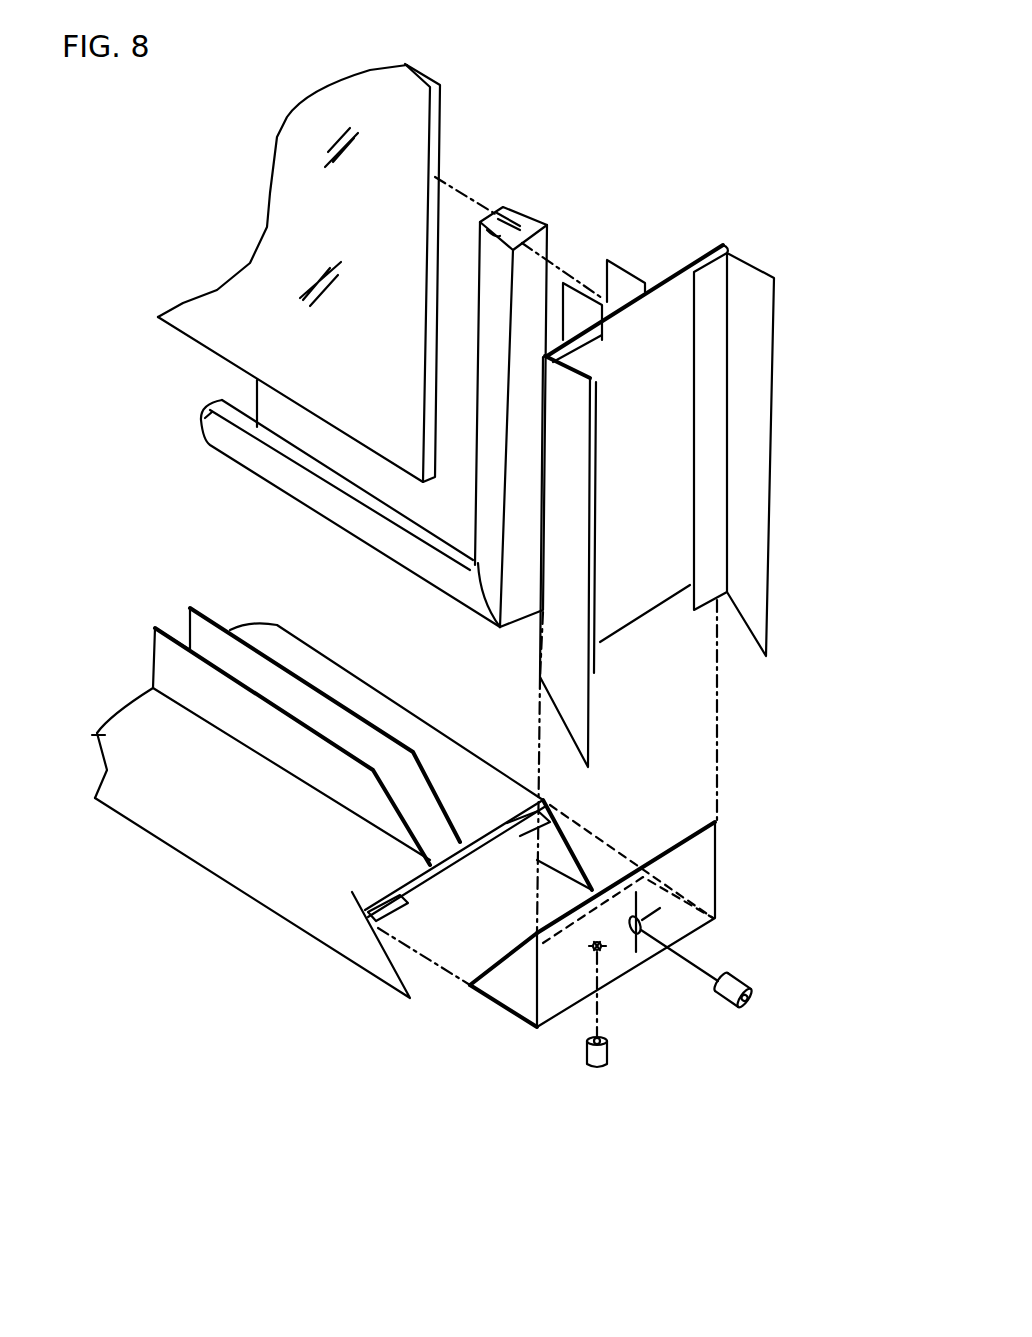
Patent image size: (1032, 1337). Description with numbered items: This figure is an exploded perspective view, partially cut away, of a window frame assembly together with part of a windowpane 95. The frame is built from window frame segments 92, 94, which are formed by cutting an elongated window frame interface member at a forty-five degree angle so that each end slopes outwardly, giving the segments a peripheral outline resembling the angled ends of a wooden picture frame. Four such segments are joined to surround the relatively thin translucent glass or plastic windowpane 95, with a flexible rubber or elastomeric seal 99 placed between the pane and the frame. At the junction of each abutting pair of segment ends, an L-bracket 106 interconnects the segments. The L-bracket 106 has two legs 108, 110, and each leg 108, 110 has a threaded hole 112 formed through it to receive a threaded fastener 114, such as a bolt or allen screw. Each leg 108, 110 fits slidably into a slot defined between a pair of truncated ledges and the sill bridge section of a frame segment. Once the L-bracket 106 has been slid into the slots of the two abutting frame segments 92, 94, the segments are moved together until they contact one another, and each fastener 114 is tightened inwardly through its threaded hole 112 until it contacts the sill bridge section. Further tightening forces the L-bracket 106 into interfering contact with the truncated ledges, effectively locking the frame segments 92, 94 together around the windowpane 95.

The window frame segment 92 is at (243, 967).
The window frame segment 94 is at (815, 395).
The windowpane 95 is at (378, 362).
The seal 99 is at (208, 447).
The L-bracket 106 is at (601, 999).
The leg 108 is at (698, 866).
The leg 110 is at (482, 997).
The threaded hole 112 is at (698, 930).
The threaded fastener 114 is at (600, 1072).